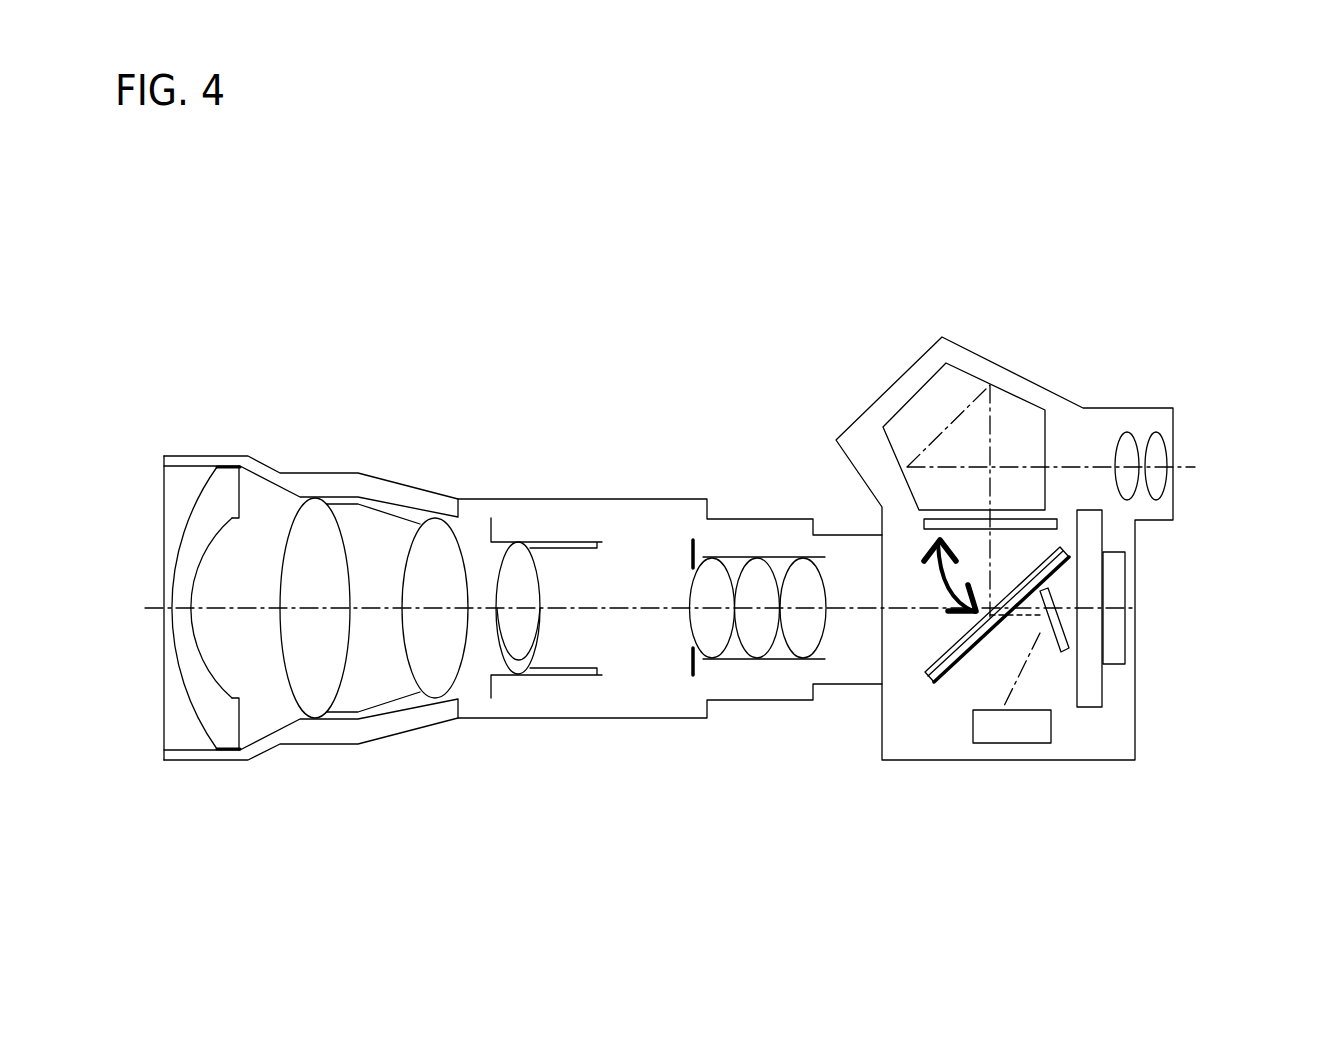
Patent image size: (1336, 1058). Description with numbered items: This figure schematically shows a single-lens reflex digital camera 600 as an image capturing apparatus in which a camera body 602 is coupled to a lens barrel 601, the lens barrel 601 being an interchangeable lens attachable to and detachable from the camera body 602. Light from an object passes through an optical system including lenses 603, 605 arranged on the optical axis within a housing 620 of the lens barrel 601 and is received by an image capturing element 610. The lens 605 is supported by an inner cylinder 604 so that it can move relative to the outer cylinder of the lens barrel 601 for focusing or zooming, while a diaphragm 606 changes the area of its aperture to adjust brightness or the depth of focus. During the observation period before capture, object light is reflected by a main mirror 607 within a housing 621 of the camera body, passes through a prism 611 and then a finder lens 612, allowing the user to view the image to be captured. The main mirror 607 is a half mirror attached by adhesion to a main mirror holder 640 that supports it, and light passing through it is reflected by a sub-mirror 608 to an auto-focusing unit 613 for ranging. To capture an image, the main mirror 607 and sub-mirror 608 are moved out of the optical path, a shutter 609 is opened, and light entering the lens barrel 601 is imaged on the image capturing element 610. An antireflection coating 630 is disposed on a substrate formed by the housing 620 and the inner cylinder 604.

The camera 600 is at (756, 151).
The lens barrel 601 is at (846, 262).
The camera body 602 is at (1202, 262).
The lens 603 is at (238, 465).
The inner cylinder 604 is at (535, 542).
The lens 605 is at (513, 642).
The diaphragm 606 is at (693, 542).
The main mirror 607 is at (930, 663).
The sub-mirror 608 is at (1053, 593).
The shutter 609 is at (1090, 688).
The image capturing element 610 is at (1113, 641).
The prism 611 is at (1033, 428).
The finder lens 612 is at (1167, 442).
The auto-focusing (AF) unit 613 is at (1012, 743).
The housing 620 is at (402, 483).
The housing 621 is at (877, 395).
The antireflection coating 630 is at (340, 503).
The main mirror holder 640 is at (936, 683).